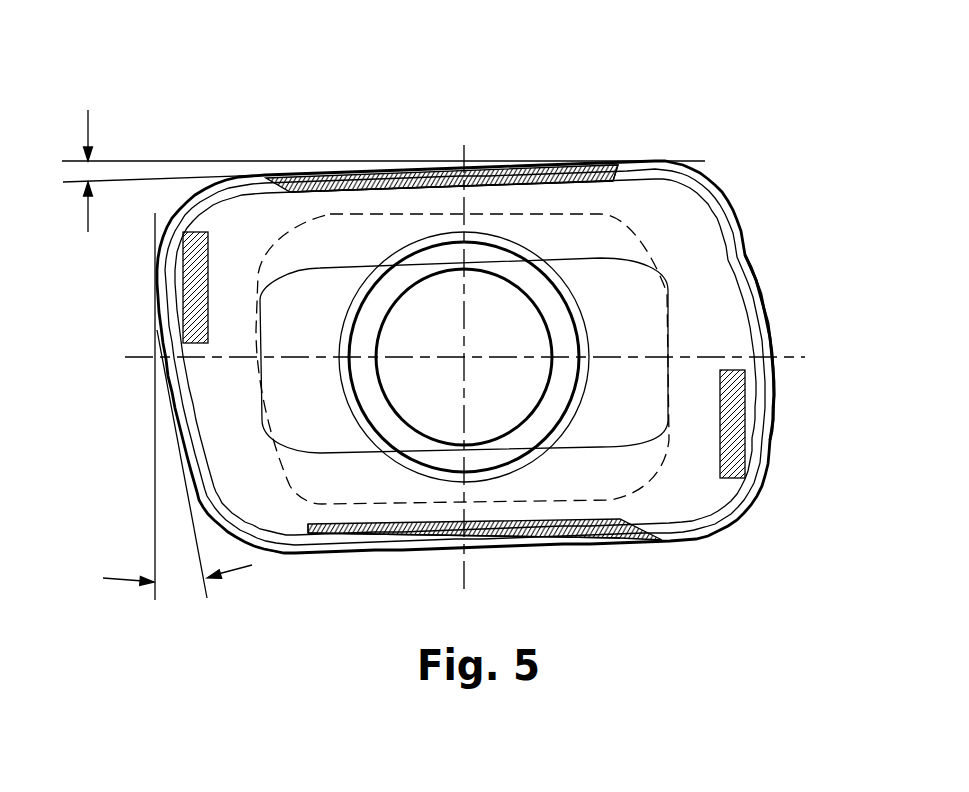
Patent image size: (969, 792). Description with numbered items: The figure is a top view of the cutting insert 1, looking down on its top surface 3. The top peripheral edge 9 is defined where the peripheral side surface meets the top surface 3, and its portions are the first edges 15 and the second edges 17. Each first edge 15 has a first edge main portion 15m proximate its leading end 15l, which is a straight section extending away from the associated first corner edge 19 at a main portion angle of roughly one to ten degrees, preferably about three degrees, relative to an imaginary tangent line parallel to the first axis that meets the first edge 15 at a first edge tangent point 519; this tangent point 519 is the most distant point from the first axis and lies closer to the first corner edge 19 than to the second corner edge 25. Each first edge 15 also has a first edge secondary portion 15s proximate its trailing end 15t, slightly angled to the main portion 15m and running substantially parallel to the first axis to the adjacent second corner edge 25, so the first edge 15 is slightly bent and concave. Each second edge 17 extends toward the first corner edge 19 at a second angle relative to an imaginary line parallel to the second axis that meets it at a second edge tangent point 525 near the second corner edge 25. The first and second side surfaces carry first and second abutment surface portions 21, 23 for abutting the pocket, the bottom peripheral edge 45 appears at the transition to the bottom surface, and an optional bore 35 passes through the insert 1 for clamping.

The cutting insert 1 is at (122, 72).
The top surface 3 is at (697, 496).
The top peripheral edge 9 is at (727, 180).
The first edge 15 is at (470, 545).
The first edge secondary portion 15s is at (265, 174).
The first edge main portion 15m is at (580, 161).
The trailing end 15t is at (236, 160).
The leading end 15l is at (655, 135).
The second edge 17 is at (738, 257).
The first corner edge 19 is at (677, 160).
The first abutment surface portion 21 is at (353, 530).
The second abutment surface portion 23 is at (185, 289).
The second corner edge 25 is at (192, 192).
The bore 35 is at (500, 417).
The bottom peripheral edge 45 is at (668, 292).
The first edge tangent point 519 is at (634, 160).
The second edge tangent point 525 is at (152, 292).